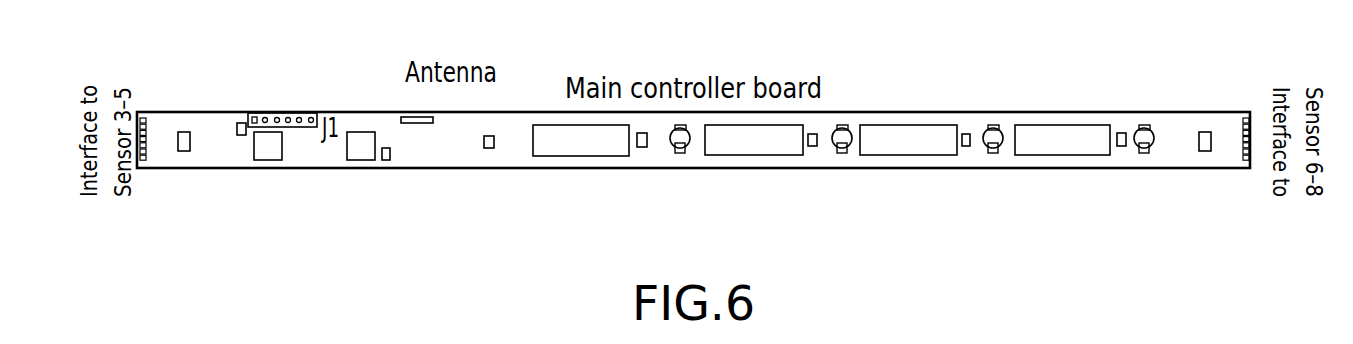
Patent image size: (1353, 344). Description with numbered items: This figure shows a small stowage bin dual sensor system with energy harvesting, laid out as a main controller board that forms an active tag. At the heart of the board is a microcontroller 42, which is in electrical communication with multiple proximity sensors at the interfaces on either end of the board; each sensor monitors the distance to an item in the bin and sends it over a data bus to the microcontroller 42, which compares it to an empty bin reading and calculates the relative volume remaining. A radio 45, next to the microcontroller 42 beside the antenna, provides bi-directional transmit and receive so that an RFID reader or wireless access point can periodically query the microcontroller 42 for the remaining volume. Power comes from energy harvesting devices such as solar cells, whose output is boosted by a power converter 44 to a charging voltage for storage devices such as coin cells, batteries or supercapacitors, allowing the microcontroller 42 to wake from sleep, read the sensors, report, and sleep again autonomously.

The microcontroller 42 is at (272, 174).
The power converter 44 is at (500, 163).
The radio 45 is at (365, 174).